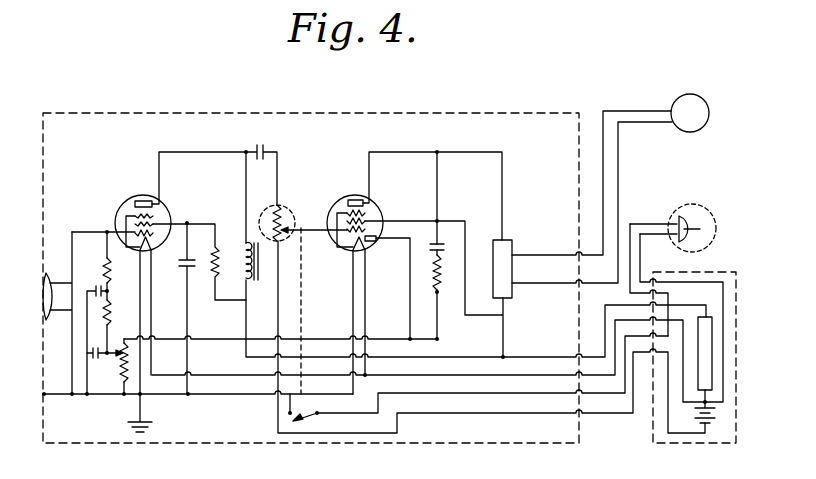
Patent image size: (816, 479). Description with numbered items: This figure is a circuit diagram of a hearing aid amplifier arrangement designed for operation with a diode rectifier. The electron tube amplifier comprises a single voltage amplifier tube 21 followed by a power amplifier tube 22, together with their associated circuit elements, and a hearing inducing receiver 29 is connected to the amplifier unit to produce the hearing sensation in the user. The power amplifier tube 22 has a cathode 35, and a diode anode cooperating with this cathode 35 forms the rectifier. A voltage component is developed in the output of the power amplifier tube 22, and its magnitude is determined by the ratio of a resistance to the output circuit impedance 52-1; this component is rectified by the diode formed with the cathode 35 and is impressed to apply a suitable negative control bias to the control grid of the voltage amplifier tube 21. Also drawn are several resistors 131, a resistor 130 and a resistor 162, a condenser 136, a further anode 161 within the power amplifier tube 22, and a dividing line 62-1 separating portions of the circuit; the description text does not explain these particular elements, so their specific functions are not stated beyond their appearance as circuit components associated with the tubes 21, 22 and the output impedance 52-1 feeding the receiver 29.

The voltage amplifier tube 21 is at (128, 200).
The power amplifier tube 22 is at (339, 203).
The cathode 35 is at (151, 245).
The resistor 131 is at (105, 270).
The potentiometer resistor 130 is at (121, 364).
The auxiliary anode 161 is at (372, 243).
The condenser 136 is at (441, 246).
The resistor 162 is at (441, 295).
The output circuit impedance 52-1 is at (506, 248).
The dividing line 62-1 is at (301, 305).
The hearing inducing receiver 29 is at (705, 102).